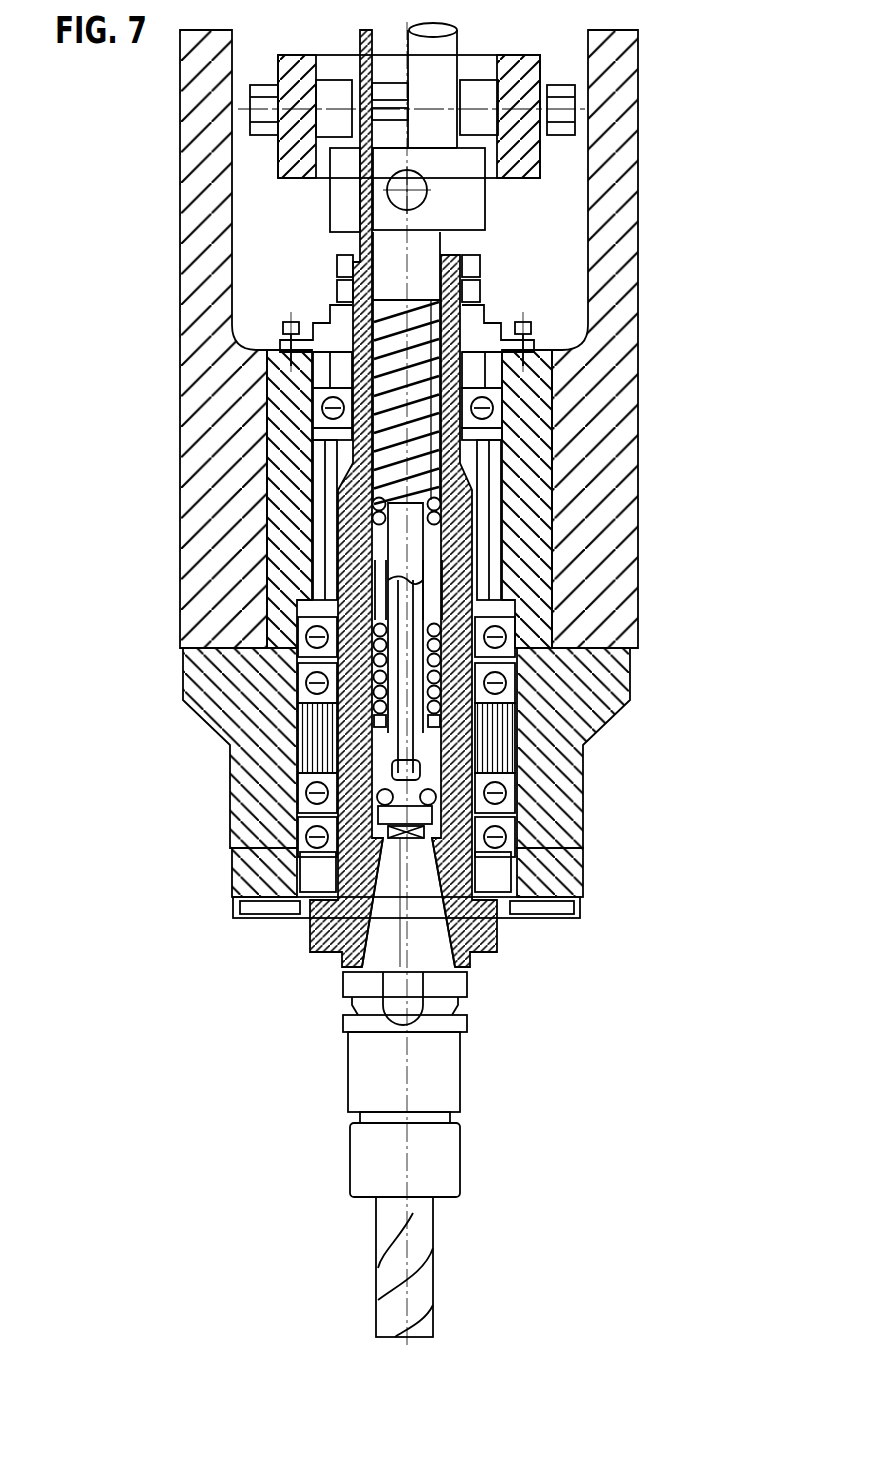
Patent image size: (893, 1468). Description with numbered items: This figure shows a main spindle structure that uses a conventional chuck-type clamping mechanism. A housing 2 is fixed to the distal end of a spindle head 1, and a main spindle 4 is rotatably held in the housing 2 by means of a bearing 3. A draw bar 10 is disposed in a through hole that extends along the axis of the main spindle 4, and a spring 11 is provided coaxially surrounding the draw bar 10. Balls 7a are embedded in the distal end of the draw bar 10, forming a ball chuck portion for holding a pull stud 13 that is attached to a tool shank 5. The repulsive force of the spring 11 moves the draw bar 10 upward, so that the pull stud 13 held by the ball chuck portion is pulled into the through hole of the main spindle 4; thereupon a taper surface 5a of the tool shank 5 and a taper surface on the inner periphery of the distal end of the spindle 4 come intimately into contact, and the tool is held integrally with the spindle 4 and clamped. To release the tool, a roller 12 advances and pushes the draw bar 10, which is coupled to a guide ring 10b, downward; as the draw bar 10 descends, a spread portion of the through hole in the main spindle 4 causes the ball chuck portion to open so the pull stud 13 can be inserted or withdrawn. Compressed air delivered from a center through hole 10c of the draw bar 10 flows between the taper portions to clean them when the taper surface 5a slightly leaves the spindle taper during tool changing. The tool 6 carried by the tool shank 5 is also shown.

The spindle head 1 is at (610, 600).
The housing 2 is at (543, 672).
The bearing 3 is at (495, 683).
The main spindle 4 is at (455, 957).
The tool shank 5 is at (437, 1083).
The taper surface 5a is at (427, 905).
The drill 6 is at (430, 1280).
The balls 7a is at (517, 757).
The draw bar 10 is at (413, 533).
The guide ring 10b is at (475, 213).
The center through hole 10c is at (405, 752).
The spring 11 is at (427, 347).
The roller 12 is at (483, 120).
The pull stud 13 is at (420, 830).